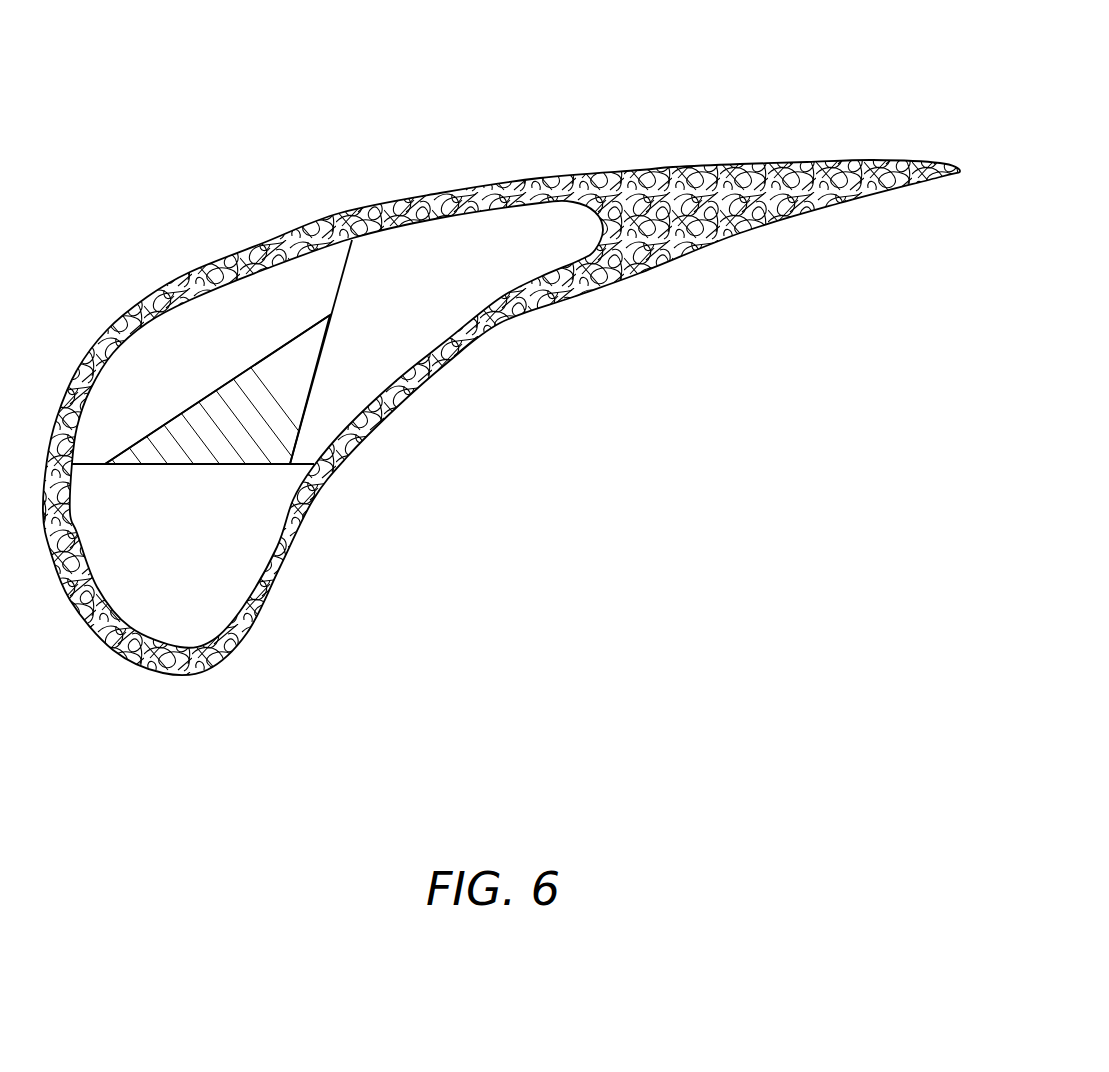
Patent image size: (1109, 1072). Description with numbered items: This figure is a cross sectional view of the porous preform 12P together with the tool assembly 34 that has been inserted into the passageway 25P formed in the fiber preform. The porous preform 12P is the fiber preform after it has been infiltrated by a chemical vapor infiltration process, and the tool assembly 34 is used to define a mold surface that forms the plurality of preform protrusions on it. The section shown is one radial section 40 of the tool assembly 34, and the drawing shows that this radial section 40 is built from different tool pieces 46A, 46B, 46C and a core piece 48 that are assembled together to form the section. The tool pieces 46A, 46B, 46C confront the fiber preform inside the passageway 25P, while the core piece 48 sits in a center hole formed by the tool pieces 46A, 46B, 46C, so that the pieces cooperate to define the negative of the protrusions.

The porous preform 12P is at (480, 384).
The passageway 25P is at (527, 237).
The tool assembly 34 is at (265, 252).
The radial section 40 is at (100, 633).
The tool piece 46A is at (155, 578).
The tool piece 46B is at (340, 358).
The tool piece 46C is at (185, 365).
The core piece 48 is at (222, 448).